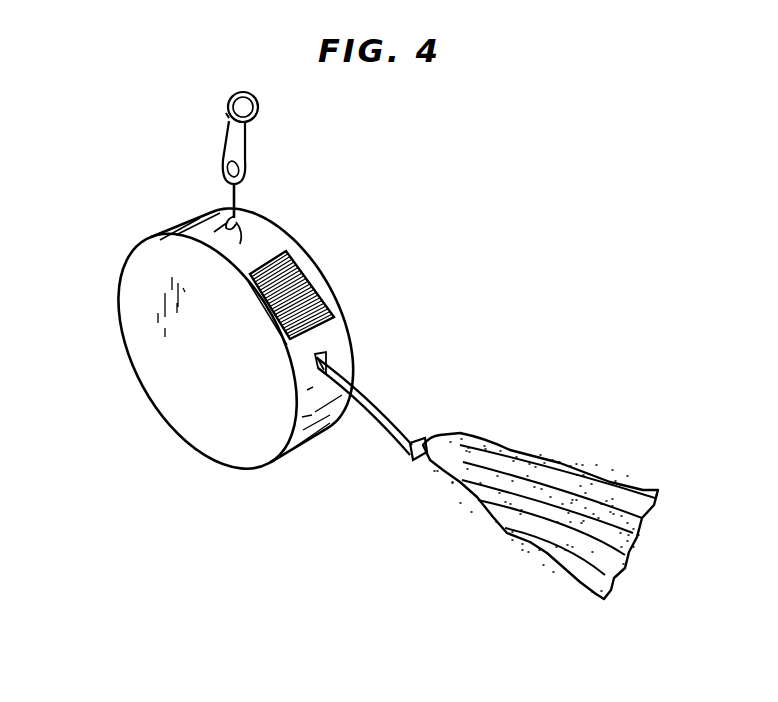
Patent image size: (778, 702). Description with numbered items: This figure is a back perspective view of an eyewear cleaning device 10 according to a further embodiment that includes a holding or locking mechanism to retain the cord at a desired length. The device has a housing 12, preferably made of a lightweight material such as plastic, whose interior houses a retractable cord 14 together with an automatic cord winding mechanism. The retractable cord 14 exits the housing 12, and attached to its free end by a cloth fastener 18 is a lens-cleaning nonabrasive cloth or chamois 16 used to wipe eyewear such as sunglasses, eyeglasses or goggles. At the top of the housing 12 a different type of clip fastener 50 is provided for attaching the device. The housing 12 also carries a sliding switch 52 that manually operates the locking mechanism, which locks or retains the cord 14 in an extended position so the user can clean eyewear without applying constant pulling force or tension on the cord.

The eyewear cleaning device 10 is at (104, 208).
The housing 12 is at (127, 323).
The retractable cord 14 is at (372, 402).
The lens-cleaning nonabrasive cloth or chamois 16 is at (570, 462).
The cloth fastener 18 is at (417, 462).
The clip fastener 50 is at (260, 118).
The sliding switch 52 is at (318, 275).